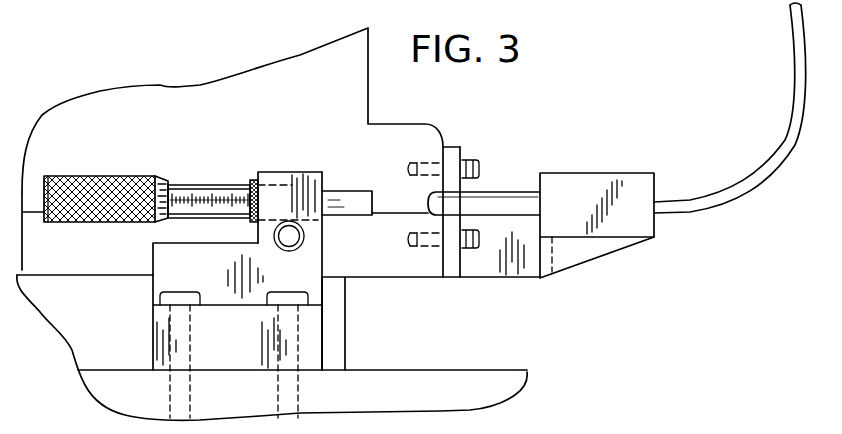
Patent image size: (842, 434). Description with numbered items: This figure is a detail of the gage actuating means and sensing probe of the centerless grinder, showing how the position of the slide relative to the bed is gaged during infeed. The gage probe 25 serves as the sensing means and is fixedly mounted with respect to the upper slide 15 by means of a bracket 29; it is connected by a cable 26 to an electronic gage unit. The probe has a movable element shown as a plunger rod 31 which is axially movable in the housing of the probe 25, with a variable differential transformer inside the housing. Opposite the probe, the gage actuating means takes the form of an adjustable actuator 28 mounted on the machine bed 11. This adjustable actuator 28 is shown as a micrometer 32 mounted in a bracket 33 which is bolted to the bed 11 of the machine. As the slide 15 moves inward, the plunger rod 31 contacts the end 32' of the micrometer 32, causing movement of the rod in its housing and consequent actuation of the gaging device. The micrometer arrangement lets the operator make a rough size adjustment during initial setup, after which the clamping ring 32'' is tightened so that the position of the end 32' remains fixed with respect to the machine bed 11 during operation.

The machine bed 11 is at (383, 388).
The upper slide 15 is at (383, 262).
The gage probe 25 is at (583, 182).
The cable 26 is at (771, 155).
The adjustable actuator 28 is at (258, 164).
The bracket 29 is at (453, 263).
The plunger rod 31 is at (488, 200).
The micrometer 32 is at (147, 183).
The end of the micrometer 32' is at (354, 188).
The clamping ring 32'' is at (232, 210).
The bracket 33 is at (310, 262).